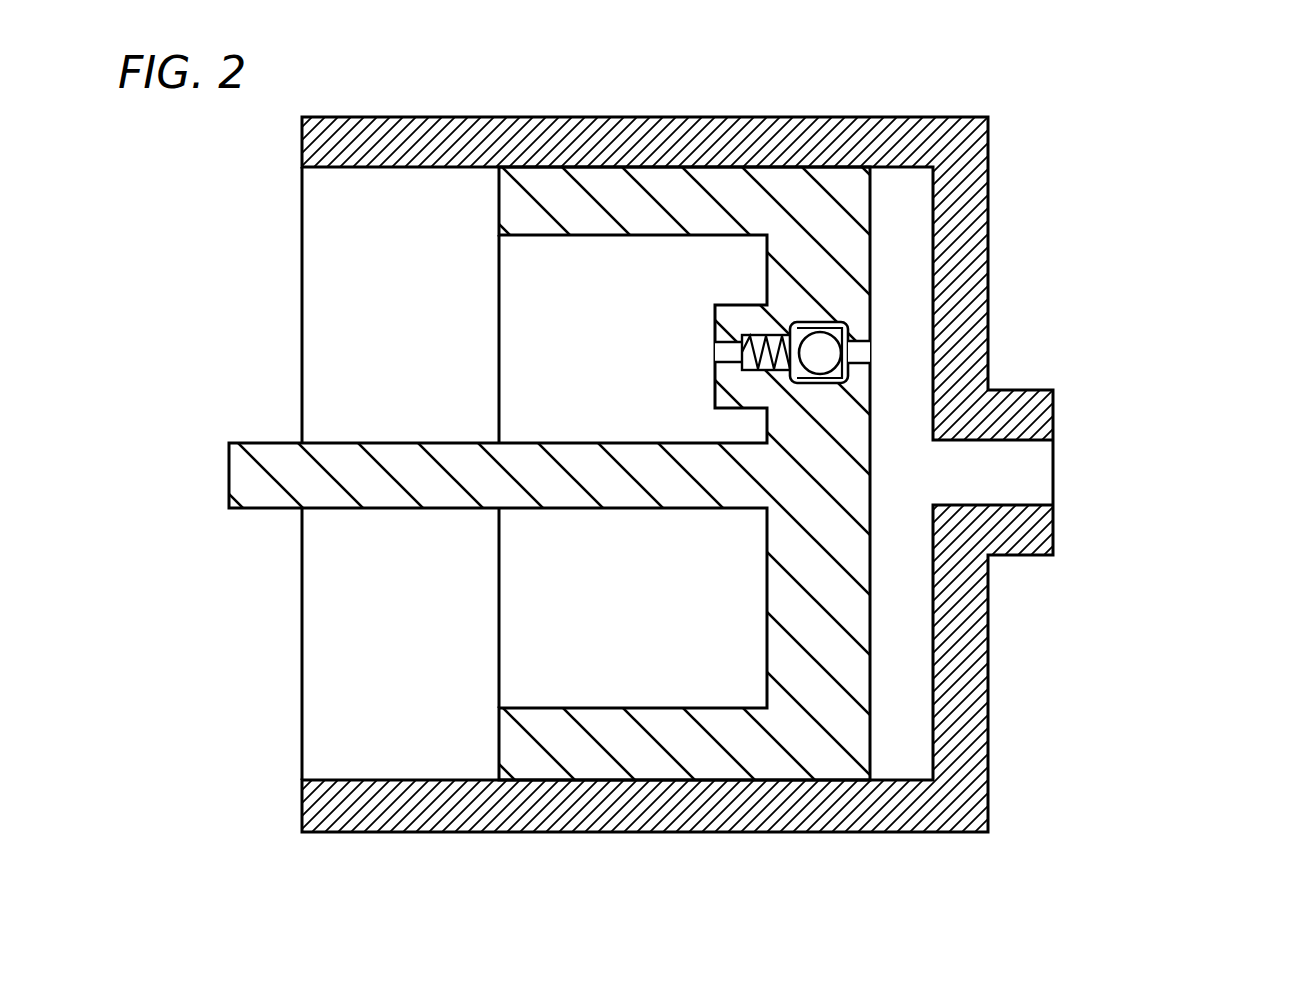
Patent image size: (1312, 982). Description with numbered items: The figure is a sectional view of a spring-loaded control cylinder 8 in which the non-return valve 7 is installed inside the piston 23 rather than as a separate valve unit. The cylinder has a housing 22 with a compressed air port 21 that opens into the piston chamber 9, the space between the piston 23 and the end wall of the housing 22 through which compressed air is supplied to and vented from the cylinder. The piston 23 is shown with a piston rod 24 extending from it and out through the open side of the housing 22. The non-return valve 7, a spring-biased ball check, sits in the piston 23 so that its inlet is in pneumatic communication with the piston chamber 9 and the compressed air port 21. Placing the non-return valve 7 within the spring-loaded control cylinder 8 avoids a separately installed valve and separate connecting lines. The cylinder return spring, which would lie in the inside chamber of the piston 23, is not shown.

The non-return valve 7 is at (893, 273).
The spring-loaded control cylinder 8 is at (763, 502).
The piston chamber 9 is at (900, 730).
The compressed air port 21 is at (1027, 460).
The housing 22 is at (975, 643).
The piston 23 is at (598, 225).
The piston rod 24 is at (396, 478).